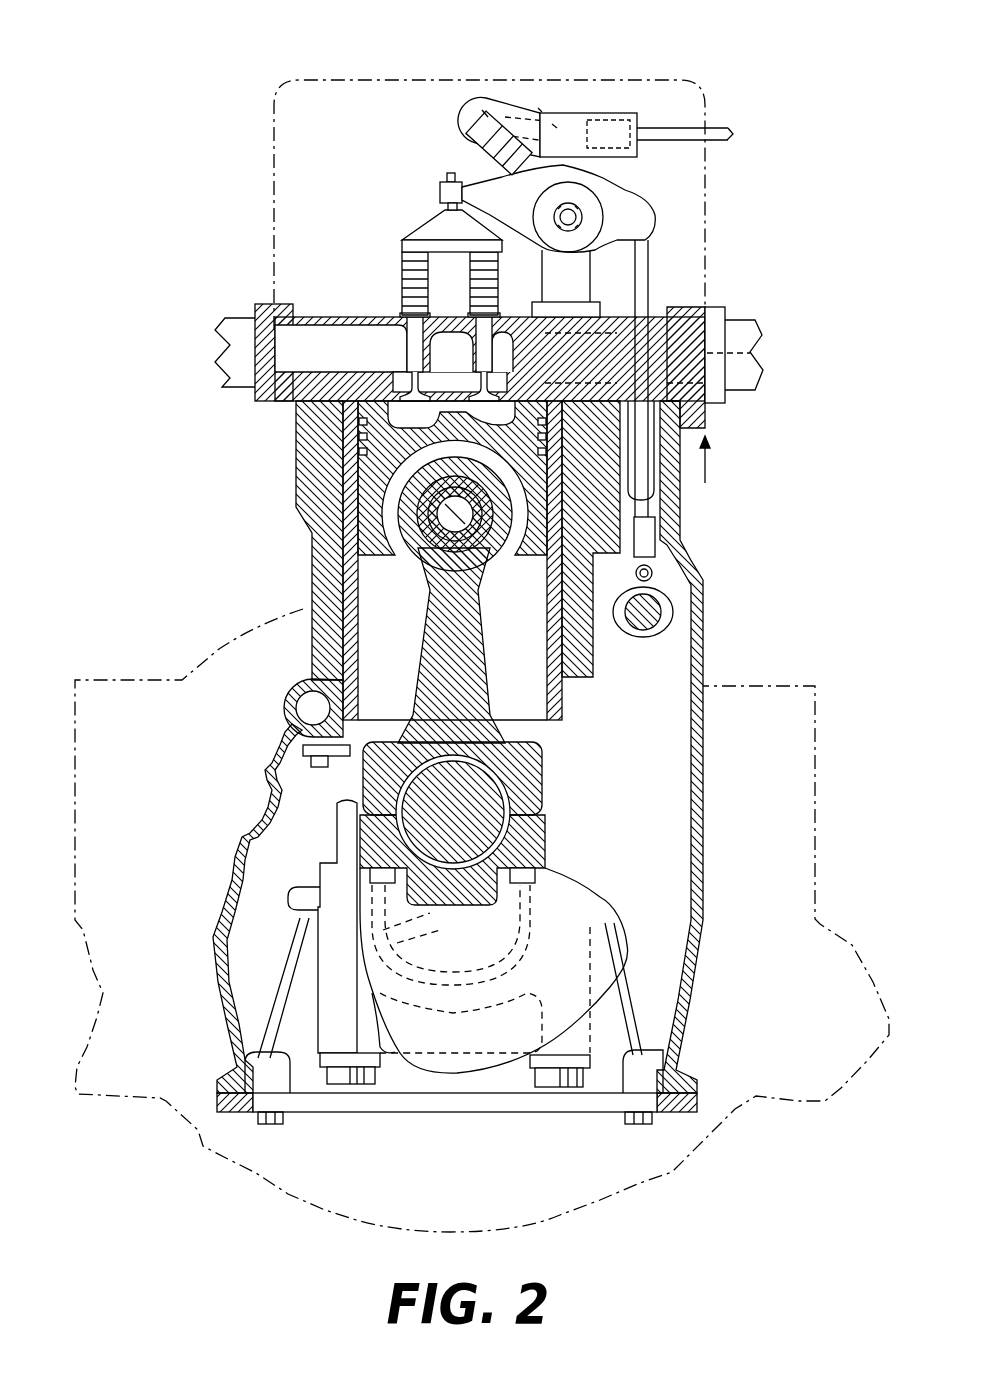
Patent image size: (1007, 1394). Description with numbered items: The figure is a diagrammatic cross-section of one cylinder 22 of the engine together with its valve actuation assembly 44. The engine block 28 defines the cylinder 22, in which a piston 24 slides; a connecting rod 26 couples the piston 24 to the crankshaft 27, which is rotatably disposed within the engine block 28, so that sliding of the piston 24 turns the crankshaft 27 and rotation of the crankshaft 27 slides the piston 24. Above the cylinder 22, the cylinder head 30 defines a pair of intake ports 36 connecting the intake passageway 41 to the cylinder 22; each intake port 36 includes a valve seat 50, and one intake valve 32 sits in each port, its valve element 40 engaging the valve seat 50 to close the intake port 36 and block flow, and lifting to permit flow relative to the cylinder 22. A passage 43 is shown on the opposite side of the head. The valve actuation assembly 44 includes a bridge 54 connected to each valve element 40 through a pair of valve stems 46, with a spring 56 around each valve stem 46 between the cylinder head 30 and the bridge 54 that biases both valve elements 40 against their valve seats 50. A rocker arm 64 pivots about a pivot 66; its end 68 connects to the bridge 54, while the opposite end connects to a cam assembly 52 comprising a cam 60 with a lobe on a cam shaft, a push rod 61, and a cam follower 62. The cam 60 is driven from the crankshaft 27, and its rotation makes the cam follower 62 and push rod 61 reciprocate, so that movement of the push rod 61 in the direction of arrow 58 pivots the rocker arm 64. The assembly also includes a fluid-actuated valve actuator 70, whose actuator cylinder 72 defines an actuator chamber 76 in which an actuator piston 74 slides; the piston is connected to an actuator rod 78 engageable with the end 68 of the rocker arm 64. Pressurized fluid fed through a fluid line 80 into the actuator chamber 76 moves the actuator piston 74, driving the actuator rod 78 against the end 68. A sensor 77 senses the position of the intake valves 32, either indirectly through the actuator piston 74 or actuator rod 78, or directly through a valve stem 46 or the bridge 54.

The cylinder 22 is at (358, 590).
The piston 24 is at (367, 527).
The connecting rod 26 is at (470, 703).
The crankshaft 27 is at (583, 887).
The engine block 28 is at (317, 640).
The cylinder head 30 is at (697, 393).
The intake valve 32 is at (390, 318).
The intake port 36 is at (413, 380).
The valve element 40 is at (457, 389).
The intake passageway 41 is at (283, 350).
The exhaust passage 43 is at (776, 337).
The valve actuation assembly 44 is at (742, 79).
The valve stem 46 is at (400, 293).
The valve seat 50 is at (440, 436).
The cam assembly 52 is at (795, 503).
The bridge 54 is at (430, 240).
The spring 56 is at (423, 257).
The arrow 58 is at (705, 476).
The cam 60 is at (623, 637).
The push rod 61 is at (647, 497).
The cam follower 62 is at (655, 563).
The rocker arm 64 is at (625, 203).
The pivot 66 is at (571, 205).
The end of rocker arm 68 is at (447, 177).
The valve actuator 70 is at (578, 87).
The actuator cylinder 72 is at (486, 114).
The actuator piston 74 is at (488, 98).
The actuator chamber 76 is at (541, 110).
The sensor 77 is at (555, 127).
The actuator rod 78 is at (482, 165).
The fluid line 80 is at (638, 127).